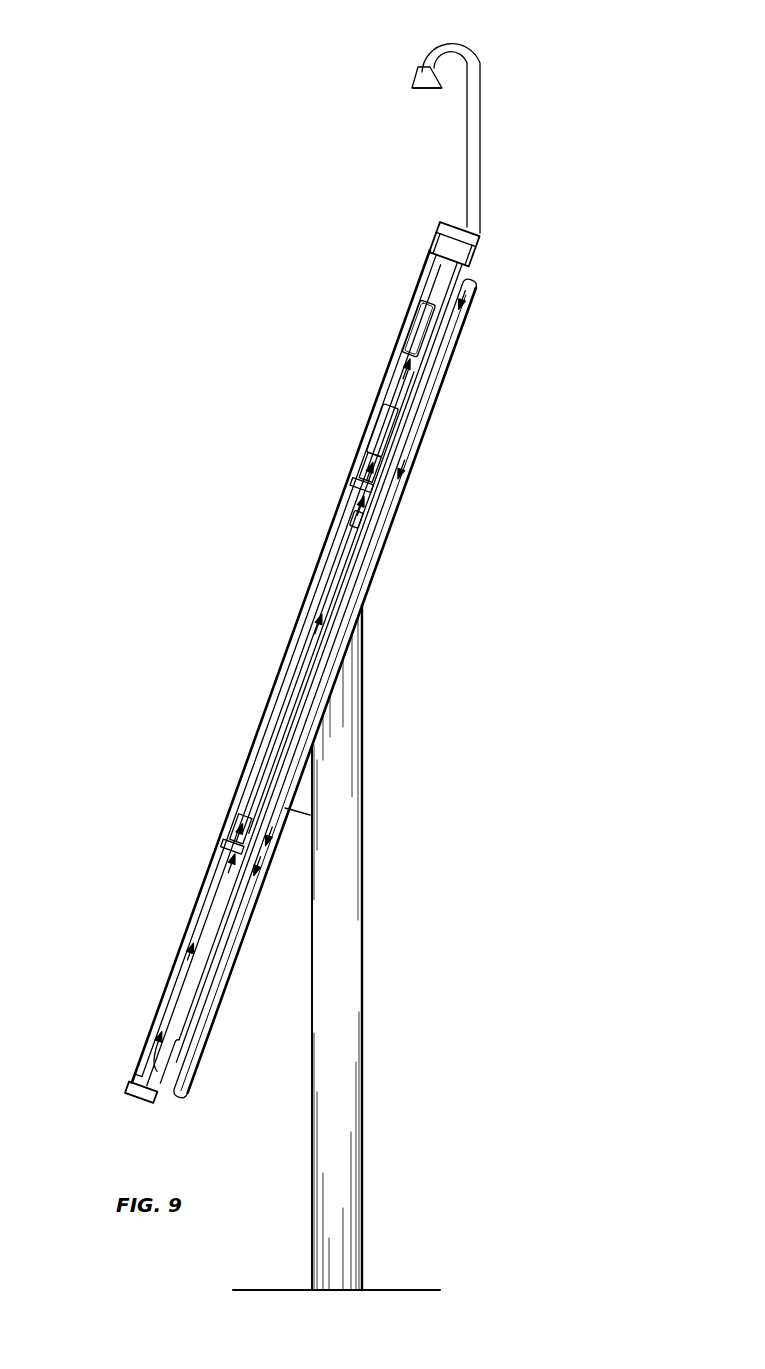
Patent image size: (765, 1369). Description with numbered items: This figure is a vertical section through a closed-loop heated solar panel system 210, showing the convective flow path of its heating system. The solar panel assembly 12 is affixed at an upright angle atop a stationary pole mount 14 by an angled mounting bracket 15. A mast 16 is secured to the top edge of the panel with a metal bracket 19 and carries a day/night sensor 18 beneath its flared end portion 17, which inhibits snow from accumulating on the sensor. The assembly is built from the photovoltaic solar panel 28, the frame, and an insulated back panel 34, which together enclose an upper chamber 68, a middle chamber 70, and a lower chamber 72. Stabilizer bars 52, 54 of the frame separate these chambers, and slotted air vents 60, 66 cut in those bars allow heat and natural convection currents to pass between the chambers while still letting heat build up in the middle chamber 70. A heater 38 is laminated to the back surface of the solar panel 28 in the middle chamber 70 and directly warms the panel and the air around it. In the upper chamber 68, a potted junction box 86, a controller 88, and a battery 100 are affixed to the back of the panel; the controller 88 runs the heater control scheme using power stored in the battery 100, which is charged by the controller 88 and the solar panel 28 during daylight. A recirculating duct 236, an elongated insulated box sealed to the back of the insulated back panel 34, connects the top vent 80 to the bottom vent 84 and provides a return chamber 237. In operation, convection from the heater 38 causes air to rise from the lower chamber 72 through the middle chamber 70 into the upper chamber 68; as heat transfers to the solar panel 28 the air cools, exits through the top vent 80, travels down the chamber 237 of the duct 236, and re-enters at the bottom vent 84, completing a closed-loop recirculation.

The heated solar panel system 210 is at (155, 250).
The solar panel assembly 12 is at (425, 252).
The pole mount 14 is at (342, 1048).
The angled mounting bracket 15 is at (285, 778).
The mast 16 is at (472, 38).
The flared end portion 17 is at (418, 72).
The day/night sensor 18 is at (427, 92).
The metal bracket 19 is at (458, 222).
The solar panel 28 is at (200, 898).
The insulated back panel 34 is at (205, 988).
The heater 38 is at (272, 740).
The stabilizer bar 52 is at (360, 485).
The stabilizer bar 54 is at (232, 836).
The air vent 60 is at (372, 512).
The air vent 66 is at (236, 870).
The upper chamber 68 is at (405, 368).
The middle chamber 70 is at (318, 622).
The lower chamber 72 is at (190, 952).
The screen-covered vent 80 is at (470, 288).
The screen-covered vent 84 is at (180, 1087).
The junction box 86 is at (415, 320).
The controller 88 is at (419, 329).
The battery 100 is at (390, 420).
The recirculating duct 236 is at (425, 490).
The chamber 237 is at (262, 865).